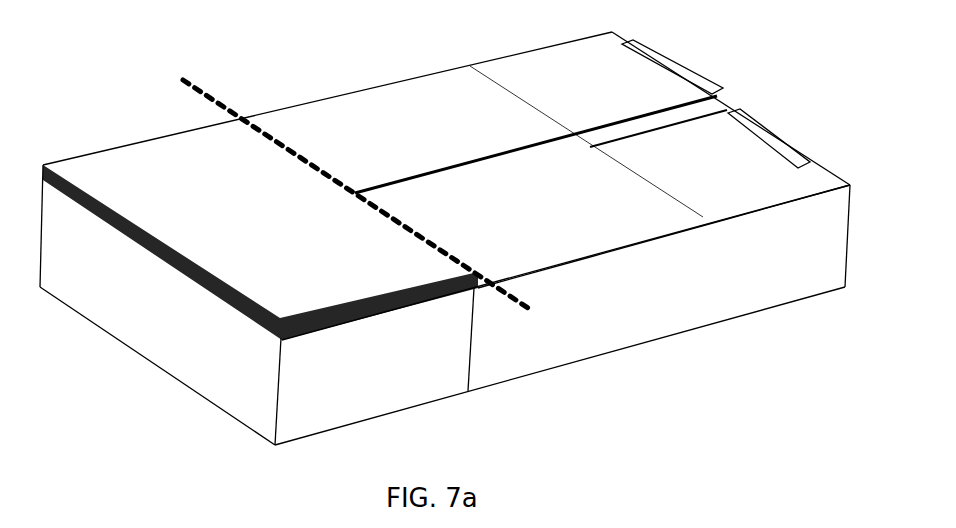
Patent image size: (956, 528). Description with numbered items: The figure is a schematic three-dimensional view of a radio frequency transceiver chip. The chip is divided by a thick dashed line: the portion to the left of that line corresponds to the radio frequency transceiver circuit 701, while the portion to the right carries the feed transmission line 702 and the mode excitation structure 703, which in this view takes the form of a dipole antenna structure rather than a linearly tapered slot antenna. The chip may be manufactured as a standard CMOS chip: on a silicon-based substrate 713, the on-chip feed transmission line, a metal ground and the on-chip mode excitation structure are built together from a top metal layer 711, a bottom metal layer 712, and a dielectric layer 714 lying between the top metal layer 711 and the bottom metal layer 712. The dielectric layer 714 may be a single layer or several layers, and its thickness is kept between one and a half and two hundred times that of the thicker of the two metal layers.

The radio frequency transceiver circuit 701 is at (43, 172).
The feed transmission line 702 is at (462, 163).
The mode excitation structure 703 is at (729, 117).
The top metal layer 711 is at (407, 283).
The bottom metal layer 712 is at (533, 270).
The silicon-based substrate 713 is at (663, 298).
The dielectric layer 714 is at (752, 200).